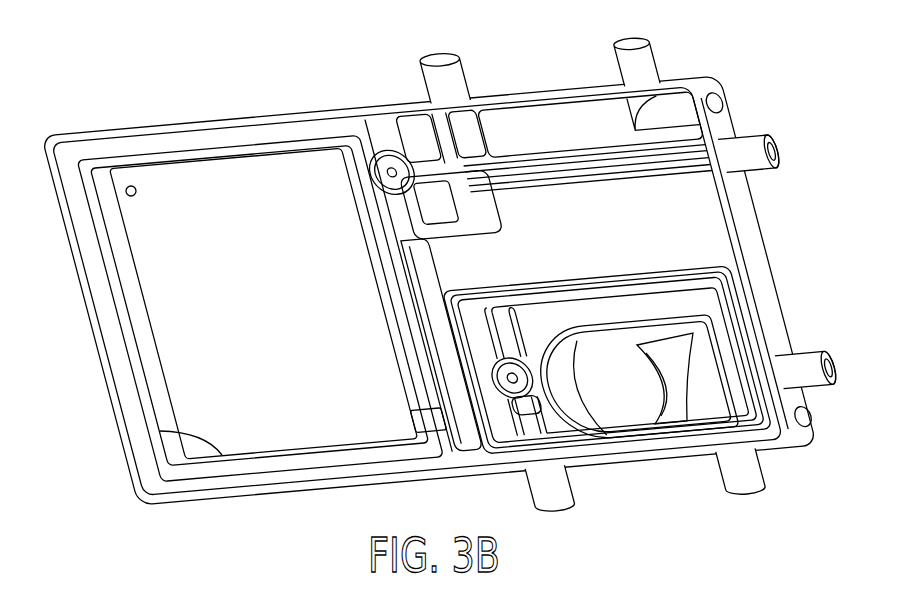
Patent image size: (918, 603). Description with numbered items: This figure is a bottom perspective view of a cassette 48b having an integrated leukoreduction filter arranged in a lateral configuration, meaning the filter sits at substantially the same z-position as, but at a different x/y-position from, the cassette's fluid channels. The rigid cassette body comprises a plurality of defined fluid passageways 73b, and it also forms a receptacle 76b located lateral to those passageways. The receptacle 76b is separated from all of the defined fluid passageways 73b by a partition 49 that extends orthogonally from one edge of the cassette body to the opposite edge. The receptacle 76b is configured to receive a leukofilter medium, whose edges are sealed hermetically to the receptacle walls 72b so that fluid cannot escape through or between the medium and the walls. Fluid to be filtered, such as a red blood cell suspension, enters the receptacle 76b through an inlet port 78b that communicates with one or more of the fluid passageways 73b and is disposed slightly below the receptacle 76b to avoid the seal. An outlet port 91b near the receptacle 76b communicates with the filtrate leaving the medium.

The cassette 48b is at (222, 511).
The partition 49 is at (363, 130).
The receptacle walls 72b is at (161, 387).
The receptacle 76b is at (246, 187).
The outlet port 91b is at (135, 188).
The inlet port 78b is at (417, 450).
The defined fluid passageways 73b is at (392, 150).